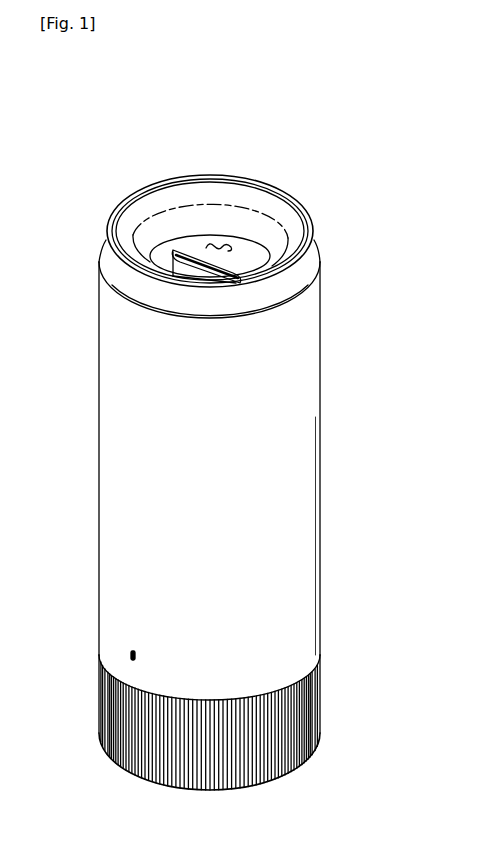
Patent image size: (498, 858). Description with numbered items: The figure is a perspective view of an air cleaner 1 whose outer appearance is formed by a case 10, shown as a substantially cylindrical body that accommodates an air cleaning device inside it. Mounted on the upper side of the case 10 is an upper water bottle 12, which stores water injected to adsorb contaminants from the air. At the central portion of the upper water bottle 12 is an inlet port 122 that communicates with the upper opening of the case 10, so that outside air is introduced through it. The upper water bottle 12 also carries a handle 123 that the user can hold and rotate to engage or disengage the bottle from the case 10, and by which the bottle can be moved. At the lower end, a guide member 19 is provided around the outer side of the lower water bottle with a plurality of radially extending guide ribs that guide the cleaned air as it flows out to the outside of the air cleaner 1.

The air cleaner 1 is at (307, 94).
The case 10 is at (307, 449).
The upper water bottle 12 is at (238, 204).
The guide member 19 is at (270, 750).
The inlet port 122 is at (227, 243).
The handle 123 is at (190, 256).